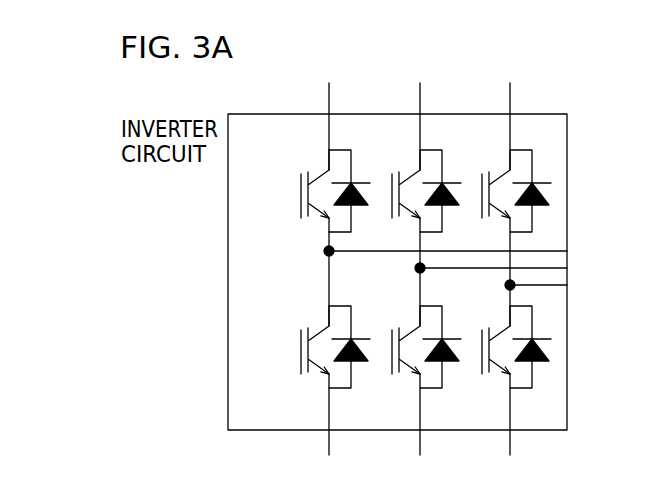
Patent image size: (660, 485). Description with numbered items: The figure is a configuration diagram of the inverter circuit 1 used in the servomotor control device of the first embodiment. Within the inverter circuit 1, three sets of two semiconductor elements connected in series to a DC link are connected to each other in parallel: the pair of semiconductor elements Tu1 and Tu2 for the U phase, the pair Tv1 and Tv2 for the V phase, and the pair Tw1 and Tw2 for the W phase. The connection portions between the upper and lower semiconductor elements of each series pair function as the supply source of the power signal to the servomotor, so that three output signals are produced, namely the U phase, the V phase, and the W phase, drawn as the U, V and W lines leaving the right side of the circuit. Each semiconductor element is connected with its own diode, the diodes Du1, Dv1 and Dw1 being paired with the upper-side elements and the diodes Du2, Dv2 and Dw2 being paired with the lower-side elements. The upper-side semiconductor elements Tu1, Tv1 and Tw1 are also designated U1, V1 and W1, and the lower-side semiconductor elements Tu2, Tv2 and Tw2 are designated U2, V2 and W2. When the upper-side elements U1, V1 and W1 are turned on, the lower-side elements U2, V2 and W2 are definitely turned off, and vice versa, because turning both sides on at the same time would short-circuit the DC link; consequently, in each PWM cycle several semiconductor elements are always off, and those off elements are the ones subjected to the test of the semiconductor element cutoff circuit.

The inverter circuit 1 is at (547, 112).
The upper-side semiconductor element of the U phase U1 is at (330, 190).
The upper-side semiconductor element of the V phase V1 is at (427, 193).
The upper-side semiconductor element of the W phase W1 is at (526, 193).
The lower-side semiconductor element of the U phase U2 is at (331, 347).
The lower-side semiconductor element of the V phase V2 is at (427, 365).
The lower-side semiconductor element of the W phase W2 is at (525, 365).
The upper-side semiconductor element Tu1 is at (300, 184).
The upper-side semiconductor element Tv1 is at (406, 197).
The upper-side semiconductor element Tw1 is at (498, 197).
The lower-side semiconductor element Tu2 is at (300, 340).
The lower-side semiconductor element Tv2 is at (400, 374).
The lower-side semiconductor element Tw2 is at (490, 374).
The diode Du1 is at (359, 192).
The diode Dv1 is at (450, 192).
The diode Dw1 is at (542, 192).
The diode Du2 is at (360, 349).
The diode Dv2 is at (450, 349).
The diode Dw2 is at (542, 349).